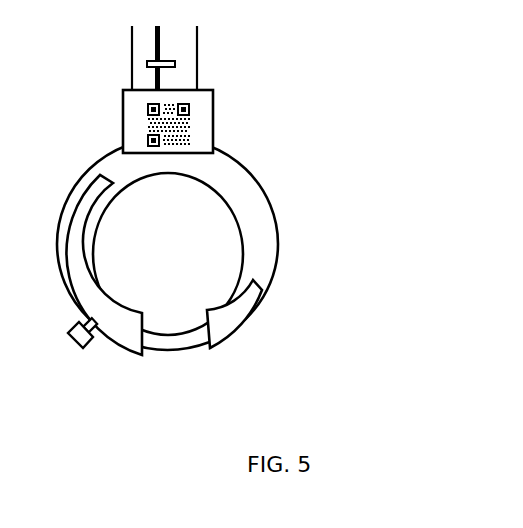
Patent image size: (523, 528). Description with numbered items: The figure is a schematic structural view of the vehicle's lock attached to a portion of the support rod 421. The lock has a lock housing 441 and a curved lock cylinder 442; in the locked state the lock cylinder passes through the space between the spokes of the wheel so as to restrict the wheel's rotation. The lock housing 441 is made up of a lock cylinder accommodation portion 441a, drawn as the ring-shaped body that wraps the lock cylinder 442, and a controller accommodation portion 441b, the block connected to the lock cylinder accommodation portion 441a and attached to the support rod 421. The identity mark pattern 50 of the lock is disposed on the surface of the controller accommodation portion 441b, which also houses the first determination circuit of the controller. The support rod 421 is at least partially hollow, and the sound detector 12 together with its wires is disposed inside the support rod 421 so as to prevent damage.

The sound detector 12 is at (175, 64).
The identity mark pattern 50 is at (148, 113).
The support rod 421 is at (197, 33).
The lock housing 441 is at (377, 107).
The lock cylinder accommodation portion 441a is at (269, 202).
The controller accommodation portion 441b is at (213, 117).
The lock cylinder 442 is at (173, 347).